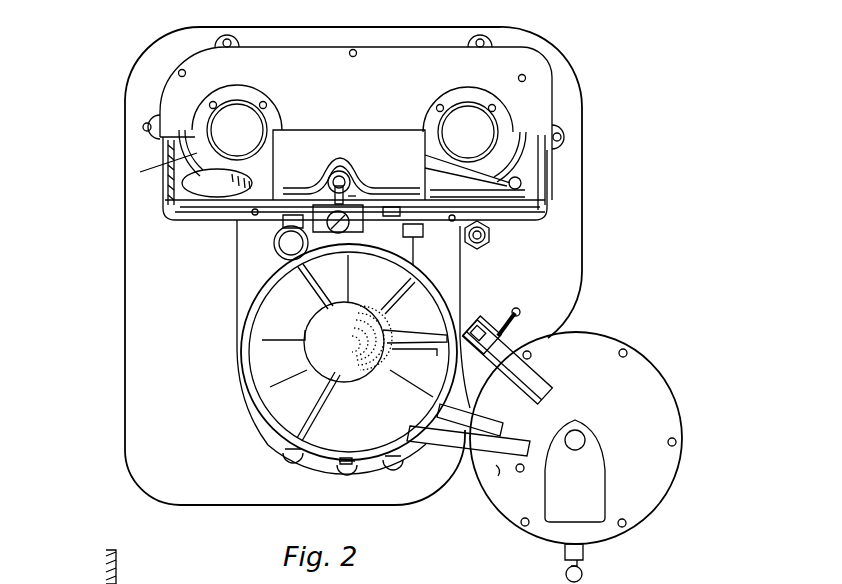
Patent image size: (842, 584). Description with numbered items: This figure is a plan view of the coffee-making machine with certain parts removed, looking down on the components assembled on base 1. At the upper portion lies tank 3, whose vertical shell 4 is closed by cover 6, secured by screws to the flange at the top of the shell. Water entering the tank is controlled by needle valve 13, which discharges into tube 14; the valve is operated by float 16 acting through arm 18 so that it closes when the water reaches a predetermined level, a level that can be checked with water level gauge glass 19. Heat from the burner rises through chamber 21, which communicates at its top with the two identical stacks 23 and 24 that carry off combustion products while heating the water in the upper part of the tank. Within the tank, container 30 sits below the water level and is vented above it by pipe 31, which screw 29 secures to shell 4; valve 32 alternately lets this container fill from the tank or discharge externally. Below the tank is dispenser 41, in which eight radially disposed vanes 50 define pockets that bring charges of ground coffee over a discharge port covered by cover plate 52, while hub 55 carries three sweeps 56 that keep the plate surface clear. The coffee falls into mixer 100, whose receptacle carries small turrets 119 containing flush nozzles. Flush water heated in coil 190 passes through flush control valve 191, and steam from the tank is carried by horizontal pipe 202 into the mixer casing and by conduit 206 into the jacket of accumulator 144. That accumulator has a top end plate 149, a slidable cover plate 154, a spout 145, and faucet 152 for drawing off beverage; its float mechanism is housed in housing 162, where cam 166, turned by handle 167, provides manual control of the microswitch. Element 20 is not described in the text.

The base 1 is at (120, 398).
The tank 3 is at (178, 179).
The vertical shell 4 is at (193, 210).
The cover 6 is at (408, 58).
The needle valve 13 is at (522, 186).
The tube 14 is at (478, 169).
The float 16 is at (217, 183).
The arm 18 is at (372, 185).
The water level gauge glass 19 is at (481, 248).
The pin 20 is at (370, 198).
The chamber 21 is at (266, 161).
The stack 23 is at (259, 129).
The stack 24 is at (493, 131).
The screw 29 is at (323, 195).
The container 30 is at (349, 165).
The pipe 31 is at (330, 178).
The valve 32 is at (344, 234).
The dispenser 41 is at (243, 363).
The vanes 50 is at (352, 285).
The cover plate 52 is at (373, 360).
The hub 55 is at (344, 342).
The sweeps 56 is at (313, 295).
The mixer 100 is at (313, 467).
The turrets 119 is at (346, 458).
The accumulator 144 is at (680, 403).
The spout 145 is at (478, 430).
The top end plate 149 is at (672, 423).
The faucet 152 is at (590, 553).
The cover plate 154 is at (607, 481).
The housing 162 is at (535, 393).
The cam 166 is at (472, 333).
The handle 167 is at (518, 321).
The coil 190 is at (140, 172).
The flush control valve 191 is at (272, 247).
The horizontal pipe 202 is at (418, 268).
The conduit 206 is at (498, 478).